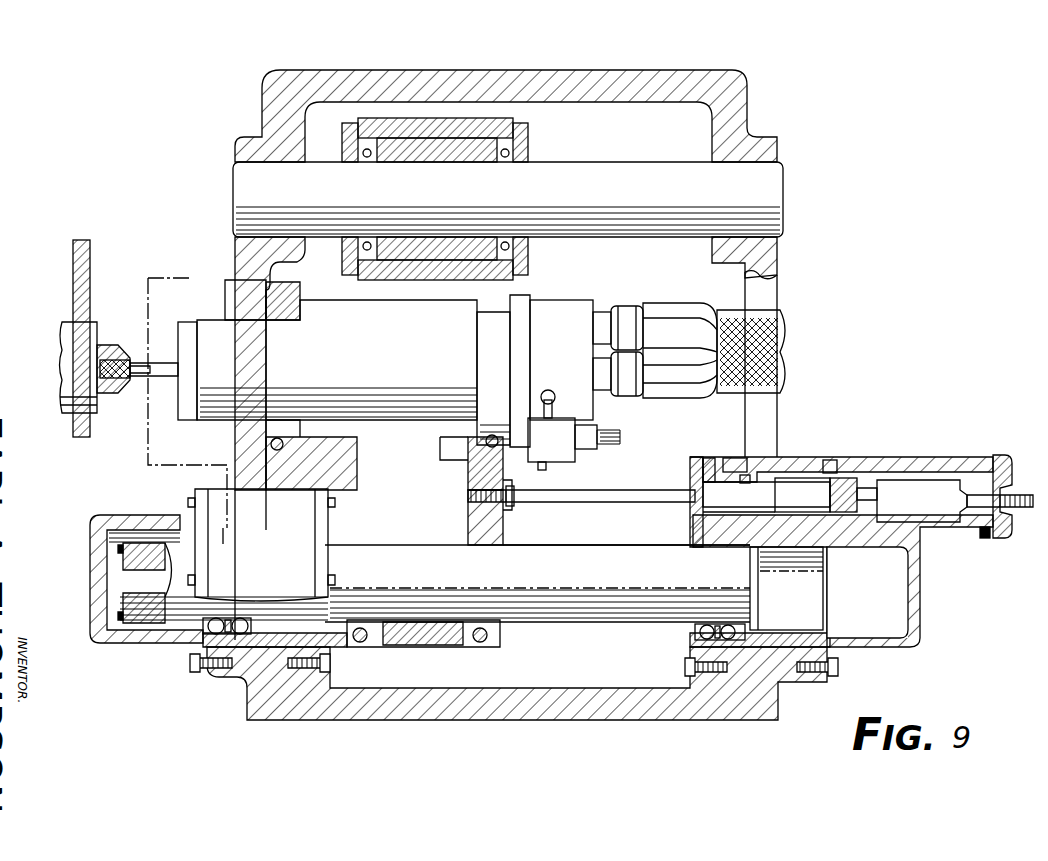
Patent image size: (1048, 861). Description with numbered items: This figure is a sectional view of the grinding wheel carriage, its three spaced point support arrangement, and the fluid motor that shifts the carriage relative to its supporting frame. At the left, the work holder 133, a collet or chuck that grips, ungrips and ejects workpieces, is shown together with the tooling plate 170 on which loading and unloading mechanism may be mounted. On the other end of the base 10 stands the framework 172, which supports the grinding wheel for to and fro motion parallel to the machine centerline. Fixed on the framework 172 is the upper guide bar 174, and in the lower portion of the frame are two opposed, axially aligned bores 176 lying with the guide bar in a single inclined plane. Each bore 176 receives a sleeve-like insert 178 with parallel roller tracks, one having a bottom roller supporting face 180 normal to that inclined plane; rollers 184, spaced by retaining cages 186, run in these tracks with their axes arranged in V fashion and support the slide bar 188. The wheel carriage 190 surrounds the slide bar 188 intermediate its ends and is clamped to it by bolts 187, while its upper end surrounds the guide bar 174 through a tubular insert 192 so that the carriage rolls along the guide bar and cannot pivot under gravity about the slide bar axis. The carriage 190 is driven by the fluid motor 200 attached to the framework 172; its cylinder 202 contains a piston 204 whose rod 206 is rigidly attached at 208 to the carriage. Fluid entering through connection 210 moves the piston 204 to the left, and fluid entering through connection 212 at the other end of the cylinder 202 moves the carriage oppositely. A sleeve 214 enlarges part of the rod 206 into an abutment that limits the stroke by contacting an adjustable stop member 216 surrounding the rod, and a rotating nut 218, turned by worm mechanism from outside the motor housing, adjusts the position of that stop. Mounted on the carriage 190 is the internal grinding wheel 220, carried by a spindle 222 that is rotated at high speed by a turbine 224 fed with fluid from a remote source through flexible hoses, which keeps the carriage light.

The base 10 is at (433, 127).
The work holder 133 is at (75, 356).
The tooling plate 170 is at (90, 242).
The framework 172 is at (731, 122).
The upper guide bar 174 is at (612, 182).
The bores 176 is at (242, 681).
The sleeve-like insert 178 is at (333, 617).
The bottom roller supporting face 180 is at (305, 633).
The rollers 184 is at (242, 620).
The retaining cages 186 is at (203, 628).
The bolts 187 is at (363, 643).
The slide bar 188 is at (560, 577).
The wheel carriage 190 is at (487, 535).
The tubular insert 192 is at (516, 130).
The fluid motor 200 is at (927, 456).
The cylinder 202 is at (940, 485).
The piston 204 is at (845, 480).
The rod 206 is at (626, 498).
The attachment point 208 is at (490, 482).
The connection 210 is at (987, 538).
The connection 212 is at (829, 460).
The sleeve 214 is at (790, 485).
The adjustable stop member 216 is at (750, 472).
The rotating nut 218 is at (704, 460).
The internal grinding wheel 220 is at (127, 350).
The spindle 222 is at (407, 362).
The high speed turbine 224 is at (566, 318).